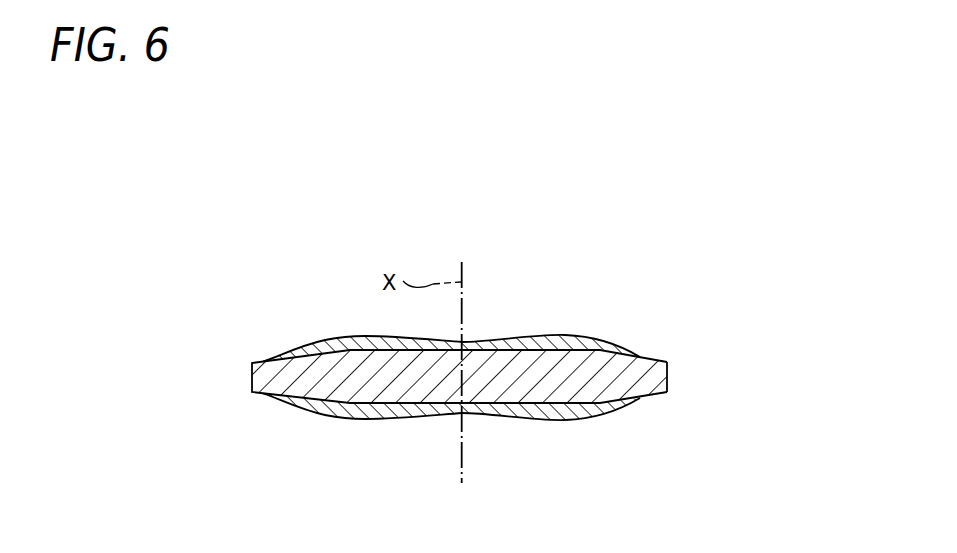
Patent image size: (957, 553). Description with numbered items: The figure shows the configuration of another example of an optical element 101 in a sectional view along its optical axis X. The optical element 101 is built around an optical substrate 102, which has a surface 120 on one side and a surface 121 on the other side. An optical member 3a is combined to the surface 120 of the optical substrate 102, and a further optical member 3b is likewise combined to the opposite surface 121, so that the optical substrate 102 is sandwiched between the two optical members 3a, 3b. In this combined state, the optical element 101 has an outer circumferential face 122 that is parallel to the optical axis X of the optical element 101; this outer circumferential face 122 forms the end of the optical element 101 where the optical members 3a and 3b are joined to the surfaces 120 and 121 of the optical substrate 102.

The optical element 101 is at (452, 380).
The optical substrate 102 is at (266, 380).
The optical member 3a is at (318, 340).
The optical member 3b is at (318, 412).
The surface 120 is at (550, 351).
The surface 121 is at (543, 411).
The outer circumferential face 122 is at (667, 377).